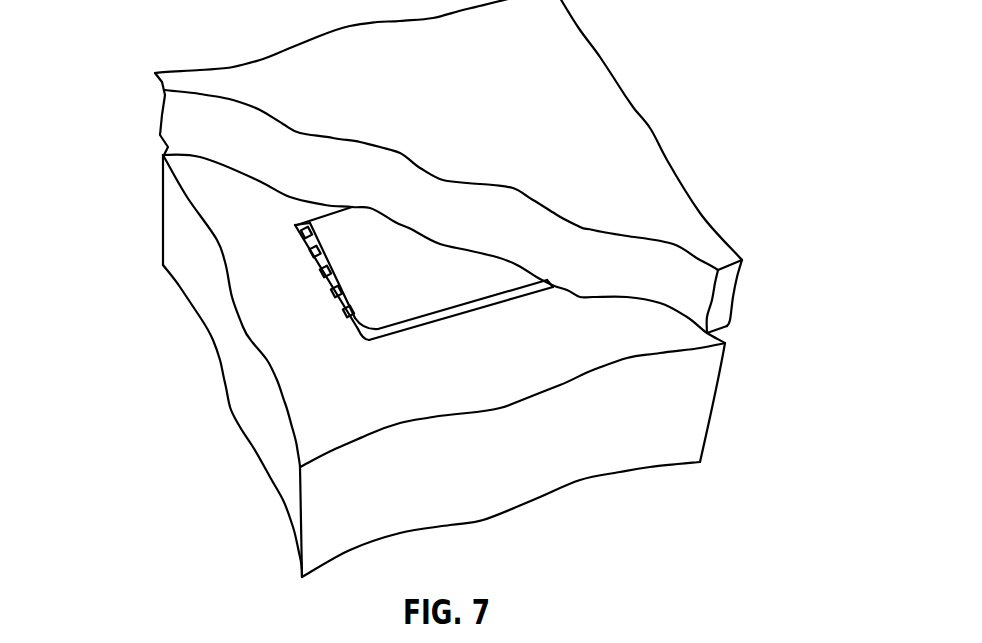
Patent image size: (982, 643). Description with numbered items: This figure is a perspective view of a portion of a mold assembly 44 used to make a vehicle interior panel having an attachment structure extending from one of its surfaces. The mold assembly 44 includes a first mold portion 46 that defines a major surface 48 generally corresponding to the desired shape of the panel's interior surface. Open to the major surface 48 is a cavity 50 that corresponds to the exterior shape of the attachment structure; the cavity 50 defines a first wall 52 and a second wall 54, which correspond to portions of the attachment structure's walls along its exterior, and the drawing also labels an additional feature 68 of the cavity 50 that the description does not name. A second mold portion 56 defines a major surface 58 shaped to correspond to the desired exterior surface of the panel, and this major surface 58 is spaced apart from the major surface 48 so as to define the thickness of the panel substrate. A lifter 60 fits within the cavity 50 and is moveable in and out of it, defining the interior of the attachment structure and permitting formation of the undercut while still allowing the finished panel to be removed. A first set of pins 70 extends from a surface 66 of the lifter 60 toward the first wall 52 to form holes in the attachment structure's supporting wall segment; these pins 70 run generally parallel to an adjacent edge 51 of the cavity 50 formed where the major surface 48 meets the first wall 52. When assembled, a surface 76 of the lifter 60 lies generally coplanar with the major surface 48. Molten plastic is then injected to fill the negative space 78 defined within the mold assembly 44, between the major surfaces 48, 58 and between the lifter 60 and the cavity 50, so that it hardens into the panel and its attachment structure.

The mold assembly 44 is at (111, 121).
The first mold portion 46 is at (572, 450).
The major surface 48 is at (519, 387).
The cavity 50 is at (487, 290).
The edge 51 is at (314, 259).
The first wall 52 is at (297, 223).
The second wall 54 is at (442, 320).
The second mold portion 56 is at (607, 117).
The major surface 58 is at (211, 165).
The lifter 60 is at (362, 344).
The surface 66 is at (325, 277).
The pocket floor edge 68 is at (423, 323).
The first set of pins 70 is at (323, 247).
The surface 76 is at (424, 282).
The negative space 78 is at (660, 343).